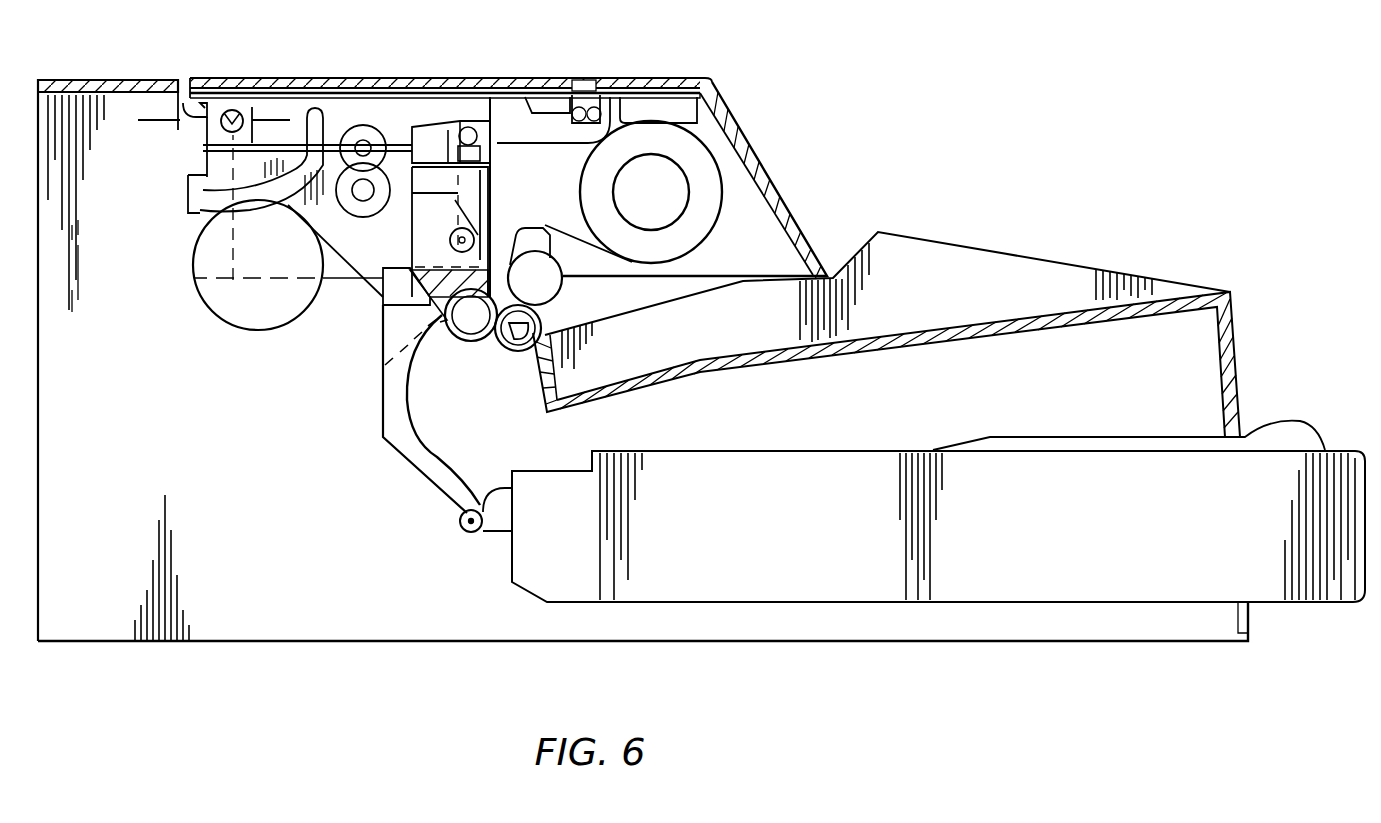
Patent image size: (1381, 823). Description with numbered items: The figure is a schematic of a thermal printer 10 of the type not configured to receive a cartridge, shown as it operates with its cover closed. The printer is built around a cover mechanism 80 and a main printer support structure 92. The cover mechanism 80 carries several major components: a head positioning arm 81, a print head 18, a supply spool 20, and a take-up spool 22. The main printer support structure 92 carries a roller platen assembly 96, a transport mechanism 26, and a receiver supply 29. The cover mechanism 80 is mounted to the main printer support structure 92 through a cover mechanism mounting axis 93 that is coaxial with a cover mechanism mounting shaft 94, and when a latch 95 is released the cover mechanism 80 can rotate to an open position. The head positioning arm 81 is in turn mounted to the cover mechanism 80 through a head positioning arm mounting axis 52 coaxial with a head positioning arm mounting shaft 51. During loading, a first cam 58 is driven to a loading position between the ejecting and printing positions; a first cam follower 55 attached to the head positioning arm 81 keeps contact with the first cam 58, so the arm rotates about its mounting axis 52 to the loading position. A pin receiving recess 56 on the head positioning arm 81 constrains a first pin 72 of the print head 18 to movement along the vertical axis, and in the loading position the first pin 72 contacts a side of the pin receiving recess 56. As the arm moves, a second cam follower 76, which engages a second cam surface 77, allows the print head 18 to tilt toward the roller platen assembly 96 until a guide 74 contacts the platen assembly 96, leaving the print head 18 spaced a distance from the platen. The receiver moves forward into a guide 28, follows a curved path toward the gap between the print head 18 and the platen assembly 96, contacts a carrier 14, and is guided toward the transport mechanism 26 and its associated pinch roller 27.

The thermal printer 10 is at (958, 162).
The carrier 14 is at (442, 312).
The print head 18 is at (383, 300).
The supply spool 20 is at (202, 302).
The take-up spool 22 is at (715, 160).
The transport mechanism 26 is at (510, 357).
The pinch roller 27 is at (560, 292).
The guide 28 is at (423, 478).
The receiver supply 29 is at (810, 603).
The head positioning arm mounting shaft 51 is at (212, 117).
The head positioning arm mounting axis 52 is at (224, 111).
The first cam follower 55 is at (353, 126).
The pin receiving recess 56 is at (490, 115).
The first cam 58 is at (368, 218).
The first pin 72 is at (473, 113).
The guide 74 is at (380, 370).
The second cam follower 76 is at (468, 228).
The second cam surface 77 is at (488, 192).
The cover mechanism 80 is at (373, 78).
The head positioning arm 81 is at (400, 145).
The main printer support structure 92 is at (253, 643).
The cover mechanism mounting axis 93 is at (240, 110).
The cover mechanism mounting shaft 94 is at (248, 110).
The latch 95 is at (578, 80).
The roller platen assembly 96 is at (460, 343).